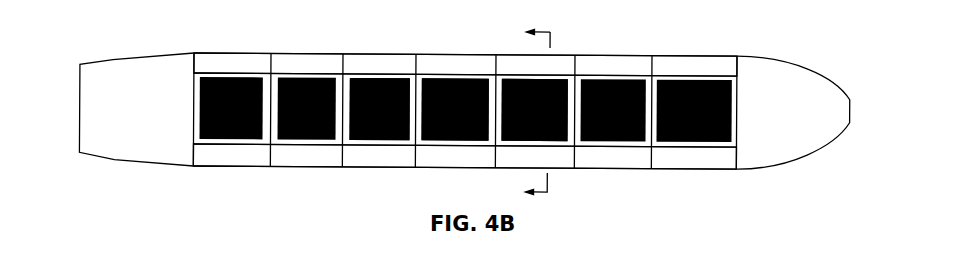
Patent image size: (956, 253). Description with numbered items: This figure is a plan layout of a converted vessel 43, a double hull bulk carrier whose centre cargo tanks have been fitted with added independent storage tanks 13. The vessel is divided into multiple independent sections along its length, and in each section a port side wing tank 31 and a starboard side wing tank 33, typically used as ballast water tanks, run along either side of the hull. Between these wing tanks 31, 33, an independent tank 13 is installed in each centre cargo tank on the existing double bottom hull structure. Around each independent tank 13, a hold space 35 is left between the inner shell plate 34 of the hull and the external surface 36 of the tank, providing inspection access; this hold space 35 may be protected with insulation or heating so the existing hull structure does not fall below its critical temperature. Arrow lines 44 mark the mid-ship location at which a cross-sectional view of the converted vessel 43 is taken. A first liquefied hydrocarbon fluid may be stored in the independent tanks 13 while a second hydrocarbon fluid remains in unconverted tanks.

The independent storage tank 13 is at (466, 109).
The port side wing tank 31 is at (465, 65).
The starboard side wing tank 33 is at (464, 156).
The inner shell plate 34 is at (517, 74).
The hold space 35 is at (438, 76).
The external surface 36 is at (361, 76).
The converted vessel 43 is at (845, 97).
The arrow lines 44 is at (547, 111).